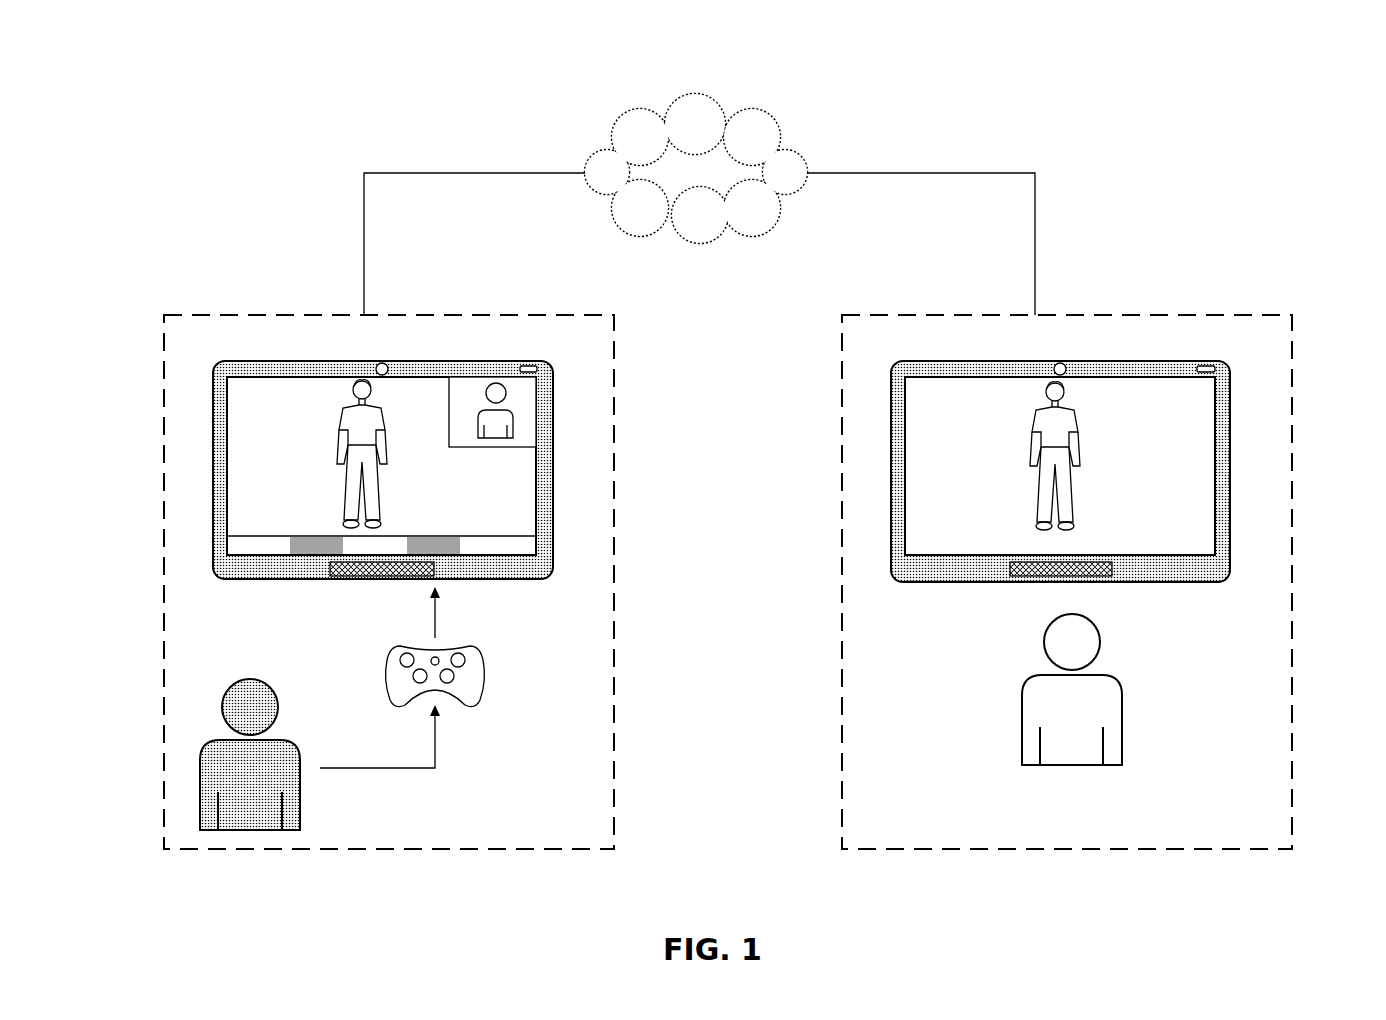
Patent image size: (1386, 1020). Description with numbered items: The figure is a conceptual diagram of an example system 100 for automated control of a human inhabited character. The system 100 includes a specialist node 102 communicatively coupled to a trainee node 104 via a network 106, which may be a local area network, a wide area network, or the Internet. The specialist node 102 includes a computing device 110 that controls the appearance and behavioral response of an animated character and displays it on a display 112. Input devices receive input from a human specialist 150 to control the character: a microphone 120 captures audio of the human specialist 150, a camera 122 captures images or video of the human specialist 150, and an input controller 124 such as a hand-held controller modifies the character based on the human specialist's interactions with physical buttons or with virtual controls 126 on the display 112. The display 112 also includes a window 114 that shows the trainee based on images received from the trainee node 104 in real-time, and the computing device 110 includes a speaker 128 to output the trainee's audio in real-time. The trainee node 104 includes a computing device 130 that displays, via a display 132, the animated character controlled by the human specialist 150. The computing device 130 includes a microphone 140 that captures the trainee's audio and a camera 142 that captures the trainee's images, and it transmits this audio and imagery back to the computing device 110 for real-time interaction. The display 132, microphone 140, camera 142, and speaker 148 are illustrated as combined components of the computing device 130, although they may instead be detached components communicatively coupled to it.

The system 100 is at (232, 72).
The specialist node 102 is at (282, 315).
The trainee node 104 is at (858, 315).
The network 106 is at (699, 204).
The computing device 110 is at (213, 468).
The display 112 is at (227, 515).
The window/screen 114 is at (518, 447).
The microphone 120 is at (522, 365).
The camera 122 is at (385, 362).
The input controller 124 is at (478, 677).
The virtual controls 126 is at (453, 543).
The speaker 128 is at (350, 575).
The computing device 130 is at (891, 480).
The display 132 is at (1215, 468).
The microphone 140 is at (1200, 362).
The camera 142 is at (1062, 362).
The speaker 148 is at (1018, 575).
The human specialist 150 is at (218, 742).